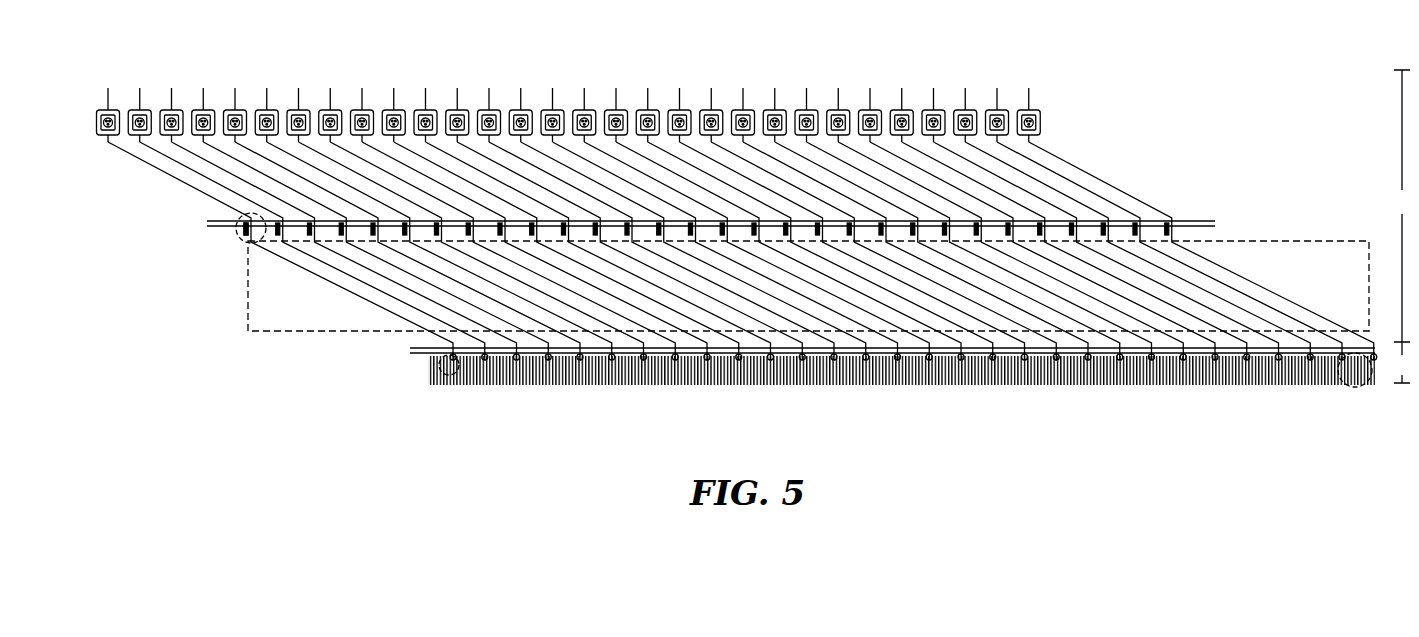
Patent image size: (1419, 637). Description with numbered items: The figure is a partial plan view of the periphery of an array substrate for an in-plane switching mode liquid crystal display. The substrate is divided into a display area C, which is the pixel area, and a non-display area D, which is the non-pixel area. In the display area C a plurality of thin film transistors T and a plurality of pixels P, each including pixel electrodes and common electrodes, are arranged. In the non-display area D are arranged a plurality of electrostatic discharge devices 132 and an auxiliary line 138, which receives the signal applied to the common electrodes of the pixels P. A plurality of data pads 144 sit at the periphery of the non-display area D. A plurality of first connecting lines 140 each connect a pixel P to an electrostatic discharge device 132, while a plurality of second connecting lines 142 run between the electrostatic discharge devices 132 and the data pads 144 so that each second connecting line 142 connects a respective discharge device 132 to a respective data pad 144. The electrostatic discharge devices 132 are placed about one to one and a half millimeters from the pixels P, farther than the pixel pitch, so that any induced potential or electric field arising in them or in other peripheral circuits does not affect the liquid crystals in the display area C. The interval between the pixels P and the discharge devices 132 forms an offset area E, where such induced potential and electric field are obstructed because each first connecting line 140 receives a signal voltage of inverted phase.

The data pad 144 is at (1042, 112).
The second connecting line 142 is at (1098, 168).
The first connecting line 140 is at (1224, 250).
The auxiliary line 138 is at (212, 222).
The electrostatic discharge device 132 is at (236, 245).
The thin film transistor T is at (441, 369).
The offset area E is at (271, 333).
The pixel P is at (1355, 388).
The non-display area D is at (1402, 206).
The display area C is at (1402, 362).